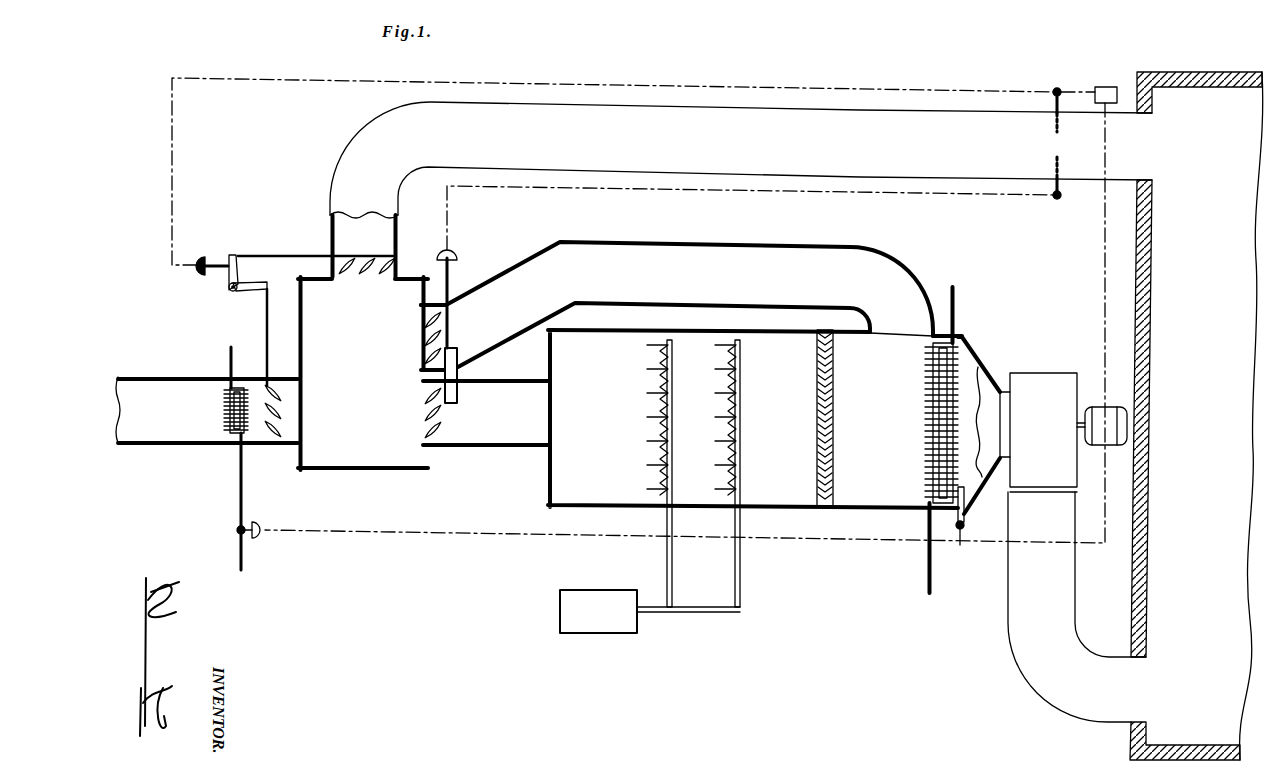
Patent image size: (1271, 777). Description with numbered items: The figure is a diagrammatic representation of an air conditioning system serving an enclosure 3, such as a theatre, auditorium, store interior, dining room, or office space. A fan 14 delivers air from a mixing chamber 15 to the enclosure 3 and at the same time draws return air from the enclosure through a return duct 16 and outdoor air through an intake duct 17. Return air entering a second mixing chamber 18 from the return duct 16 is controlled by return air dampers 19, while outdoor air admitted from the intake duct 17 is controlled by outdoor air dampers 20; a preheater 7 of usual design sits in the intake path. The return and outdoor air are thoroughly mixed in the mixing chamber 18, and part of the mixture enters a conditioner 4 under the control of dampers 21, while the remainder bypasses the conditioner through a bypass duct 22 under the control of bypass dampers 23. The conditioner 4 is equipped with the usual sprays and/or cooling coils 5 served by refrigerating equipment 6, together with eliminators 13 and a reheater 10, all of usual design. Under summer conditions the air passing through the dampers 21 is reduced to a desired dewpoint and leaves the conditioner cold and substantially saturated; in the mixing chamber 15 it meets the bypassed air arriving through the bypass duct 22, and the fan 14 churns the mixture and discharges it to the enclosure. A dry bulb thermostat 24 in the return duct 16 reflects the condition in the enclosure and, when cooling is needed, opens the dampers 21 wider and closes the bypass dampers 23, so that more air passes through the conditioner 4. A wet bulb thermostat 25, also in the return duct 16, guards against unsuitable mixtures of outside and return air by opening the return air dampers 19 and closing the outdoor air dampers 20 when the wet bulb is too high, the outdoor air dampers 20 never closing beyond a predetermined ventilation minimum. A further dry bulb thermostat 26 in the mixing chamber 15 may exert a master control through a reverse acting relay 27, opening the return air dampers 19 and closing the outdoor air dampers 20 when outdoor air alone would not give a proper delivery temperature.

The enclosure 3 is at (1181, 299).
The conditioner 4 is at (782, 493).
The sprays and/or cooling coils 5 is at (658, 441).
The refrigerating equipment 6 is at (590, 594).
The preheater 7 is at (224, 405).
The reheater 10 is at (927, 430).
The eliminators 13 is at (815, 402).
The fan 14 is at (1041, 378).
The mixing chamber 15 is at (973, 354).
The return duct 16 is at (373, 128).
The intake duct 17 is at (146, 382).
The mixing chamber 18 is at (383, 462).
The return air dampers 19 is at (360, 274).
The outdoor air dampers 20 is at (284, 420).
The dampers 21 is at (446, 426).
The bypass duct 22 is at (599, 248).
The bypass dampers 23 is at (449, 338).
The dry bulb thermostat 24 is at (1061, 195).
The wet bulb thermostat 25 is at (1054, 104).
The dry bulb thermostat 26 is at (965, 523).
The reverse acting relay 27 is at (1107, 88).